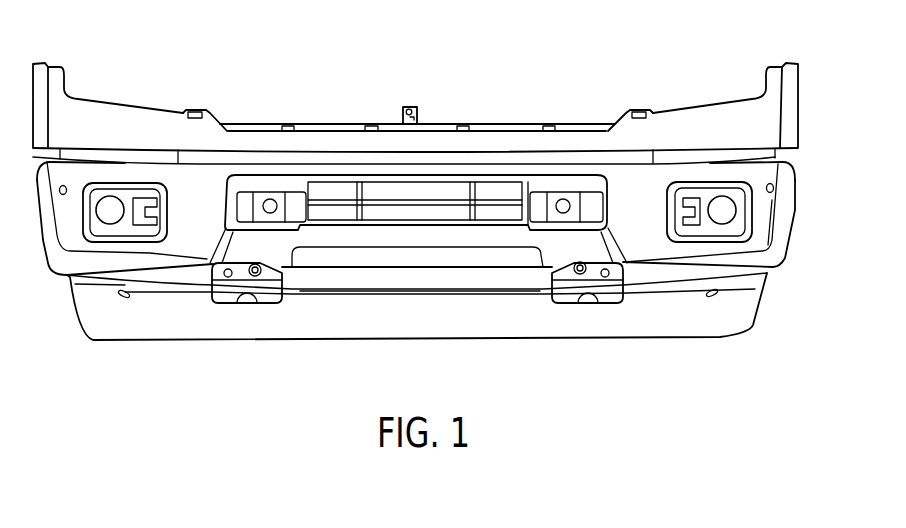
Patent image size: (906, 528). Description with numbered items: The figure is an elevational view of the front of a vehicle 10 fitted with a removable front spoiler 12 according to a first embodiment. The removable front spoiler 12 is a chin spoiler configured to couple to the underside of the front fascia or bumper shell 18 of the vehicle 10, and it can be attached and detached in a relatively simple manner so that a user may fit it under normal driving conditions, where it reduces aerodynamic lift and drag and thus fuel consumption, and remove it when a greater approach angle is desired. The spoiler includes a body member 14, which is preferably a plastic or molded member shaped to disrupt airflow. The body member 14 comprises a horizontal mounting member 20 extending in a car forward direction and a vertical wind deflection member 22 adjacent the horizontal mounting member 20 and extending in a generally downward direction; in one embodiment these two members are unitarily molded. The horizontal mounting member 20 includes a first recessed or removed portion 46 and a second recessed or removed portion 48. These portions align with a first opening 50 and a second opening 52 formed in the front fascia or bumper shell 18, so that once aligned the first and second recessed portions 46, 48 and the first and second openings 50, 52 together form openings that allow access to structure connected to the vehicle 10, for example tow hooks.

The vehicle 10 is at (422, 228).
The removable front spoiler 12 is at (765, 311).
The body member 14 is at (680, 337).
The front fascia or bumper shell 18 is at (797, 228).
The horizontal mounting member 20 is at (97, 289).
The vertical wind deflection member 22 is at (435, 317).
The first recessed portion 46 is at (584, 300).
The second recessed portion 48 is at (251, 300).
The first opening 50 is at (563, 263).
The second opening 52 is at (276, 263).